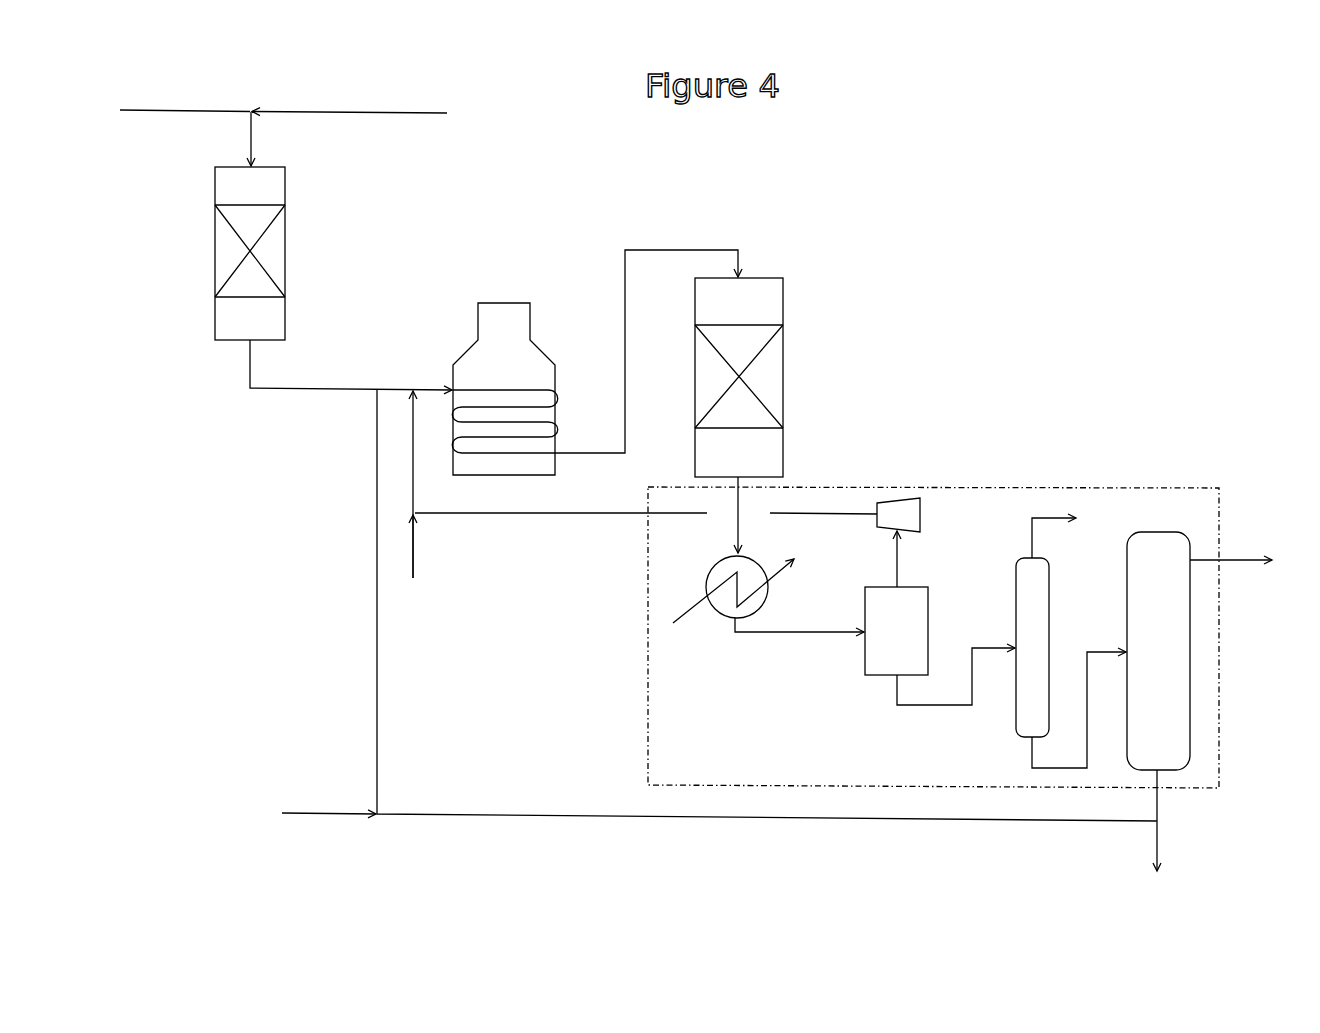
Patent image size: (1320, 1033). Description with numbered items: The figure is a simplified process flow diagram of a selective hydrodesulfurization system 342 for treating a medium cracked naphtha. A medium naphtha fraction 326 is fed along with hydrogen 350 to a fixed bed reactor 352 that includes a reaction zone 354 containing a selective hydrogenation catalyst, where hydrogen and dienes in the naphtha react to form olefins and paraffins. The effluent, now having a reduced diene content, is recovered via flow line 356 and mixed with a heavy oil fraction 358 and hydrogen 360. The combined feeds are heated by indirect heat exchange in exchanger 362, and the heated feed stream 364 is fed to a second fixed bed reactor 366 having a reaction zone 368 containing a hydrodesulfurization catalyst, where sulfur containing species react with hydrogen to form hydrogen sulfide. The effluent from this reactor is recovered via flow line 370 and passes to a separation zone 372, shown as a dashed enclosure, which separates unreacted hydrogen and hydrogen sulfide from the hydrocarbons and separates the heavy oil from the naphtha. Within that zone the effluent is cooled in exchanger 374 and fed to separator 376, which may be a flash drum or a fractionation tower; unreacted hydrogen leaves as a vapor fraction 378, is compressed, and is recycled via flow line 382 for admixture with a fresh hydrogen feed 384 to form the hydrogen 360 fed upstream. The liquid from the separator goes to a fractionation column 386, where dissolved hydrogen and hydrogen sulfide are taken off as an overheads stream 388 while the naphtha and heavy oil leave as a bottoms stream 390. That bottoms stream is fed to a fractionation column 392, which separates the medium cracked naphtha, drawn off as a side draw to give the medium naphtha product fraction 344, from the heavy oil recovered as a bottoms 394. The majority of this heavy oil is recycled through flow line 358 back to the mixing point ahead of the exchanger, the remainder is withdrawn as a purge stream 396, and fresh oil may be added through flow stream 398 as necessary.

The selective hydrodesulfurization system 342 is at (903, 207).
The medium naphtha fraction 326 is at (202, 110).
The hydrogen 350 is at (351, 115).
The fixed bed reactor 352 is at (225, 165).
The reaction zone 354 is at (272, 258).
The flow line 356 is at (346, 387).
The heavy oil fraction 358 is at (372, 511).
The hydrogen 360 is at (418, 490).
The exchanger 362 is at (486, 301).
The heated feed stream 364 is at (649, 247).
The fixed bed reactor 366 is at (766, 277).
The reaction zone 368 is at (770, 378).
The flow line 370 is at (739, 498).
The separation zone 372 is at (1041, 490).
The exchanger 374 is at (751, 566).
The separator 376 is at (940, 646).
The vapor fraction 378 is at (900, 560).
The flow line 382 is at (611, 515).
The fresh hydrogen feed 384 is at (415, 566).
The fractionation column 386 is at (1032, 647).
The overheads stream 388 is at (1034, 540).
The bottoms stream 390 is at (922, 519).
The fractionation column 392 is at (1158, 651).
The bottoms 394 is at (1160, 801).
The purge stream 396 is at (1160, 850).
The flow stream 398 is at (306, 813).
The medium naphtha product fraction 344 is at (1231, 559).